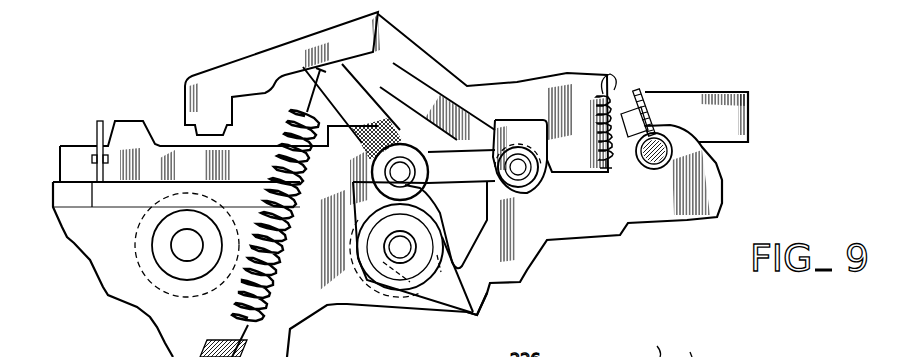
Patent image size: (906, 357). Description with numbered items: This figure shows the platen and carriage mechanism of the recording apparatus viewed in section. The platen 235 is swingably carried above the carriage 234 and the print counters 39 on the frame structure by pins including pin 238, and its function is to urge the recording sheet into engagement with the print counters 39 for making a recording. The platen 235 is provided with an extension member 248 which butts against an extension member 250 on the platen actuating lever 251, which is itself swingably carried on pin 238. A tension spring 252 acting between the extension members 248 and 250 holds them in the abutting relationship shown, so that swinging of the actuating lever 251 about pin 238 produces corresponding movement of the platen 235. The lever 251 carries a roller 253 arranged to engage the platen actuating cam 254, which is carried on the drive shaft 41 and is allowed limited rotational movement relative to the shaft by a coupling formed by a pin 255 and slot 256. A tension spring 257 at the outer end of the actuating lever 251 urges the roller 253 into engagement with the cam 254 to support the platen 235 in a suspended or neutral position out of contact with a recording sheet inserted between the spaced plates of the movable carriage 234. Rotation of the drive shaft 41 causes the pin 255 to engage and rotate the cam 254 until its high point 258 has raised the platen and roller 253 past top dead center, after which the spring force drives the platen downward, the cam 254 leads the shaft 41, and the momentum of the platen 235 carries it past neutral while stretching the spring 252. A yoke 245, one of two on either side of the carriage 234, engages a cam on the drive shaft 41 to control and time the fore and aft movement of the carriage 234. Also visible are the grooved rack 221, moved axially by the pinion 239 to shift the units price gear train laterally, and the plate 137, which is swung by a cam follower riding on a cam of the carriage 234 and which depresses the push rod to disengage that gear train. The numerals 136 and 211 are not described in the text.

The stop post 136 is at (100, 120).
The carriage 234 is at (151, 79).
The platen 235 is at (266, 52).
The platen actuating lever 251 is at (367, 110).
The extension member 248 is at (573, 72).
The tension spring 252 is at (613, 92).
The pinion 239 is at (650, 92).
The grooved rack 221 is at (651, 170).
The extension member 250 is at (580, 175).
The pin 238 is at (524, 184).
The yoke 245 is at (524, 272).
The roller 253 is at (355, 200).
The drive shaft 41 is at (396, 252).
The tension spring 257 is at (232, 313).
The print counters 39 is at (146, 228).
The slot 256 is at (357, 309).
The pin 255 is at (428, 278).
The platen actuating cam 254 is at (442, 280).
The high point 258 is at (480, 318).
The plate 137 is at (667, 342).
The support member 211 is at (683, 353).